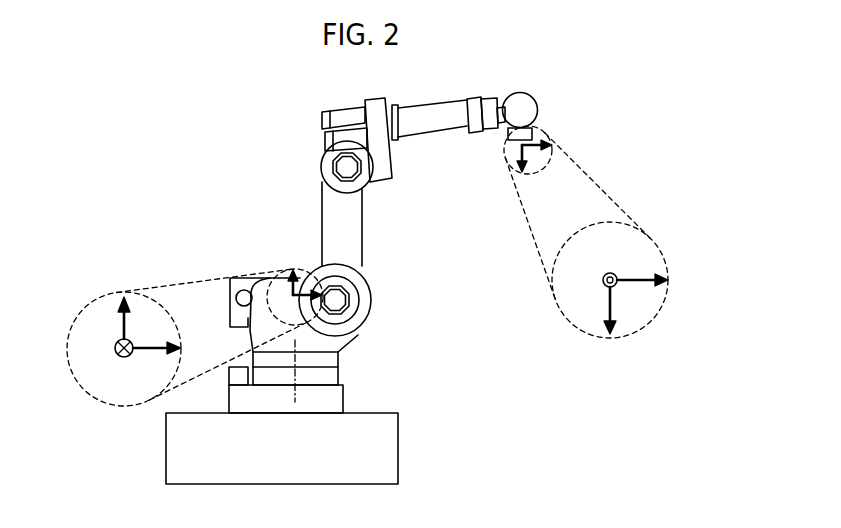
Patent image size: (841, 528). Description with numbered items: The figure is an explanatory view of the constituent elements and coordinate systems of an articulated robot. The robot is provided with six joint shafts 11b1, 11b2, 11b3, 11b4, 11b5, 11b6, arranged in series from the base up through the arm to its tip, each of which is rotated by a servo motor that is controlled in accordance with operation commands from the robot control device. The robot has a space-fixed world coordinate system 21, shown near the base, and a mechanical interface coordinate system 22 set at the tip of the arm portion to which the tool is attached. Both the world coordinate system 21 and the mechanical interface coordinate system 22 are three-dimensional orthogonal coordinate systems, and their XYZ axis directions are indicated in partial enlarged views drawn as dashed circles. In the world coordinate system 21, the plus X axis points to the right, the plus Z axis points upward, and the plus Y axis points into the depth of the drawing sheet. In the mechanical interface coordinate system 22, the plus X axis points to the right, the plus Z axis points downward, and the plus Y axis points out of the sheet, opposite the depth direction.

The joint shaft 11b1 is at (300, 362).
The joint shaft 11b2 is at (372, 300).
The joint shaft 11b3 is at (316, 165).
The joint shaft 11b4 is at (476, 124).
The joint shaft 11b5 is at (508, 126).
The joint shaft 11b6 is at (545, 133).
The world coordinate system 21 is at (278, 284).
The mechanical interface coordinate system 22 is at (562, 170).